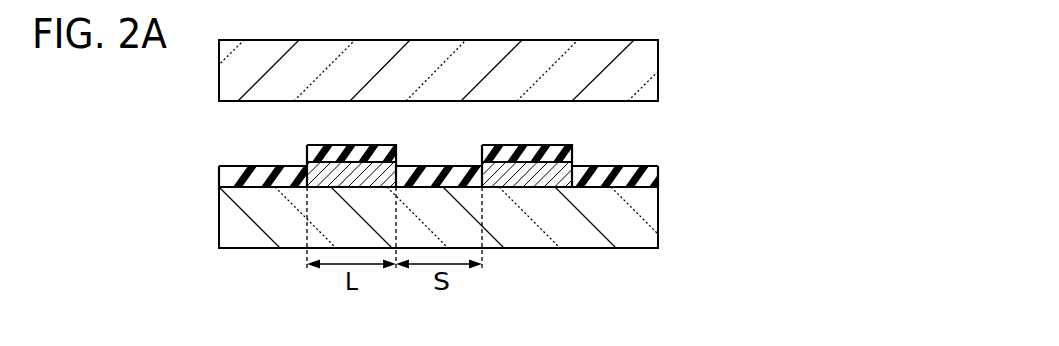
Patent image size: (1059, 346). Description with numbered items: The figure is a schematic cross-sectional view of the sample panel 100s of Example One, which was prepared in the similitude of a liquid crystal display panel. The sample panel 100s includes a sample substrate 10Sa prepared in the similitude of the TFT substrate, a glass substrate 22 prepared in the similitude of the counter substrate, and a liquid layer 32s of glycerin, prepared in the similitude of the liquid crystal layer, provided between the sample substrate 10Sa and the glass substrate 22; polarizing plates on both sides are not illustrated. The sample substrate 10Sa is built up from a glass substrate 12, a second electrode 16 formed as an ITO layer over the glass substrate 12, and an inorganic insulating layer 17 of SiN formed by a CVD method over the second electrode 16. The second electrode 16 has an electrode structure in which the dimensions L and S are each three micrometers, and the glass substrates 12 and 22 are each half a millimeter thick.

The glass substrate 22 is at (618, 68).
The inorganic insulating layer 17 is at (563, 152).
The second electrode 16 is at (557, 165).
The glass substrate 12 is at (613, 228).
The liquid layer 32s is at (462, 143).
The sample substrate 10Sa is at (722, 117).
The sample panel 100s is at (825, 72).